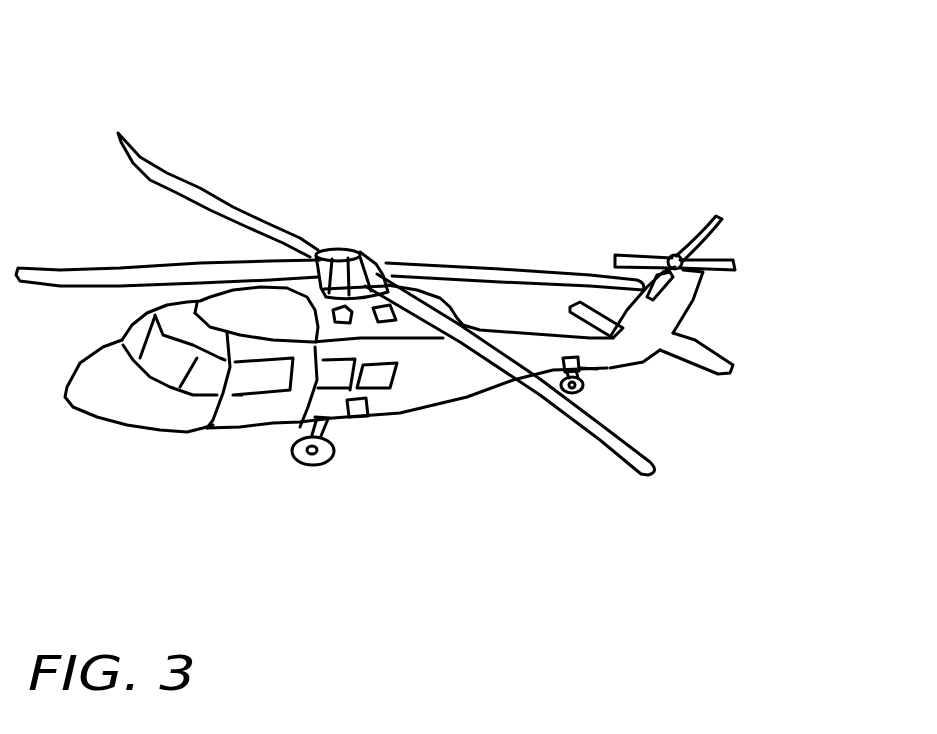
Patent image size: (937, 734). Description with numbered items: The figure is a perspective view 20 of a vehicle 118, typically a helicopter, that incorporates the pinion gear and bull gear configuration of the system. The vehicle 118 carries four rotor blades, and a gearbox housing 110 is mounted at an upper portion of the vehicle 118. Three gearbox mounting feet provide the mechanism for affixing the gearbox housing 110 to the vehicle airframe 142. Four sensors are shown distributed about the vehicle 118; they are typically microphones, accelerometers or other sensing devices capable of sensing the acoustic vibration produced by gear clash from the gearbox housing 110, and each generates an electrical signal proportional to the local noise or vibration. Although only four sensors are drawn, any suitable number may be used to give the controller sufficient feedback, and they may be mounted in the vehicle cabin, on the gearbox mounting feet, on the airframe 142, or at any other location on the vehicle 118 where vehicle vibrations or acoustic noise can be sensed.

The perspective view 20 is at (696, 59).
The gearbox housing 110 is at (353, 257).
The vehicle 118 is at (440, 490).
The vehicle airframe 142 is at (383, 270).